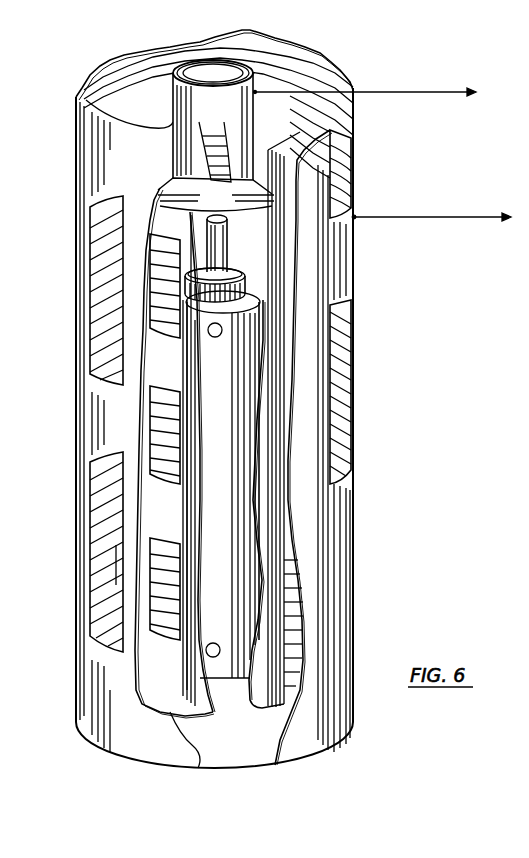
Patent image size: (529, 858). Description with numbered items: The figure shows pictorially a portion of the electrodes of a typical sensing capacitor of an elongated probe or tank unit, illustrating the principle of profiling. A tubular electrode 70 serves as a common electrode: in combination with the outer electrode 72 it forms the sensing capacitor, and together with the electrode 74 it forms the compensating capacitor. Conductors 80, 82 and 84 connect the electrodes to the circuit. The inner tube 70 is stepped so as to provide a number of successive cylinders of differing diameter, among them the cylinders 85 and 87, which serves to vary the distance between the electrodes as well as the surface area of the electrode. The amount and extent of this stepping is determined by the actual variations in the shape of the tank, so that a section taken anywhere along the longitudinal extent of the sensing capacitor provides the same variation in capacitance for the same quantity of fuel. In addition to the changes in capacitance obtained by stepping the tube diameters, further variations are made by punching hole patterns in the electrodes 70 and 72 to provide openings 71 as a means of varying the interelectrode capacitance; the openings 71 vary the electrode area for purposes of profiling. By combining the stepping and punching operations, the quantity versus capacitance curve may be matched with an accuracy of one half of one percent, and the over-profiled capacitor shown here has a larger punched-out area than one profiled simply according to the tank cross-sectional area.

The tubular electrode 70 is at (270, 537).
The openings 71 is at (175, 300).
The electrode 72 is at (327, 593).
The electrode 74 is at (238, 412).
The conductor 80 is at (222, 264).
The conductor 82 is at (423, 92).
The conductor 84 is at (430, 217).
The cylinder 85 is at (250, 292).
The cylinder 87 is at (257, 108).